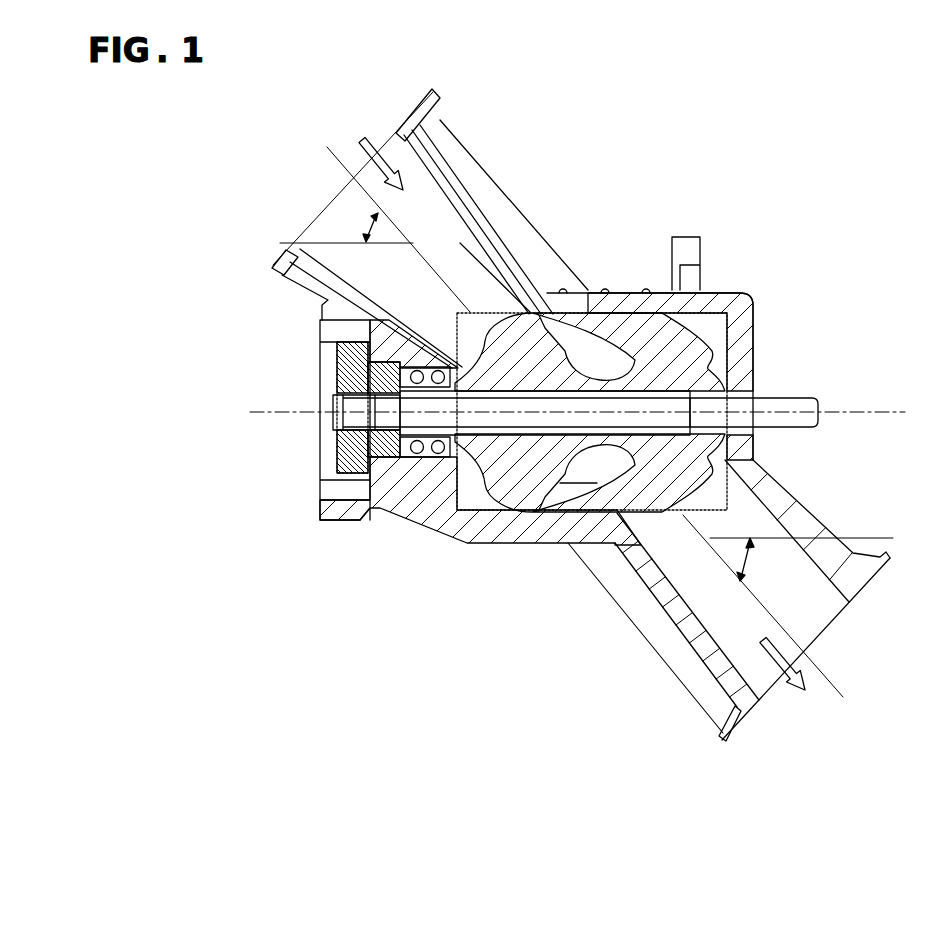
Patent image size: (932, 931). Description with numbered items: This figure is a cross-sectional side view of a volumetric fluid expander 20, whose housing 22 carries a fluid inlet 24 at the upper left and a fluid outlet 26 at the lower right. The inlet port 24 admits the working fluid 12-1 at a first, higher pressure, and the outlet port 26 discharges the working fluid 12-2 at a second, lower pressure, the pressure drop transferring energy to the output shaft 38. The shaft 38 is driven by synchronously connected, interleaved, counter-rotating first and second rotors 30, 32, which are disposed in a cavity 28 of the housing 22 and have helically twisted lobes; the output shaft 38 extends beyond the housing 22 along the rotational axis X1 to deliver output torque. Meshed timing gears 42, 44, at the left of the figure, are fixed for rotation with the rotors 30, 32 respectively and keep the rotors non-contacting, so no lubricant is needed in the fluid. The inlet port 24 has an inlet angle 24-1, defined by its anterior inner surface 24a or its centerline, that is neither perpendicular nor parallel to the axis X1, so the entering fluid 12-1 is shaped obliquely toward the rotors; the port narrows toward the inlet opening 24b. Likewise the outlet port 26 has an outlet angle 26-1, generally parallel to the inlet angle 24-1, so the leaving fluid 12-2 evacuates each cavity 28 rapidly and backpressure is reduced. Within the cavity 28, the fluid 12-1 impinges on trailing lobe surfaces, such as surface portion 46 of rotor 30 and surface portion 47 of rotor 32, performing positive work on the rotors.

The working fluid at a first pressure 12-1 is at (360, 135).
The working fluid at a second pressure 12-2 is at (765, 638).
The volumetric fluid expander 20 is at (601, 217).
The housing 22 is at (717, 292).
The fluid inlet 24 is at (373, 128).
The inlet angle 24-1 is at (370, 226).
The anterior inner surface 24a is at (365, 292).
The inlet opening 24b is at (445, 322).
The fluid outlet 26 is at (786, 693).
The outlet angle 26-1 is at (752, 556).
The cavity 28 is at (611, 322).
The first rotor 30 is at (567, 441).
The second rotor 32 is at (483, 494).
The output shaft 38 is at (776, 403).
The timing gear 42 is at (320, 407).
The timing gear 44 is at (328, 376).
The surface portion 46 is at (592, 356).
The surface portion 47 is at (493, 270).
The axis X1 is at (857, 409).